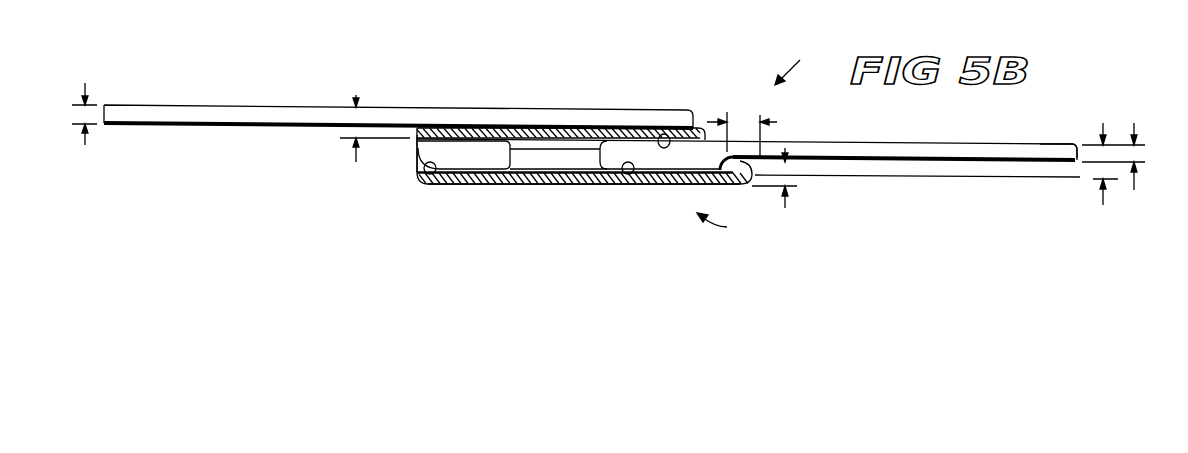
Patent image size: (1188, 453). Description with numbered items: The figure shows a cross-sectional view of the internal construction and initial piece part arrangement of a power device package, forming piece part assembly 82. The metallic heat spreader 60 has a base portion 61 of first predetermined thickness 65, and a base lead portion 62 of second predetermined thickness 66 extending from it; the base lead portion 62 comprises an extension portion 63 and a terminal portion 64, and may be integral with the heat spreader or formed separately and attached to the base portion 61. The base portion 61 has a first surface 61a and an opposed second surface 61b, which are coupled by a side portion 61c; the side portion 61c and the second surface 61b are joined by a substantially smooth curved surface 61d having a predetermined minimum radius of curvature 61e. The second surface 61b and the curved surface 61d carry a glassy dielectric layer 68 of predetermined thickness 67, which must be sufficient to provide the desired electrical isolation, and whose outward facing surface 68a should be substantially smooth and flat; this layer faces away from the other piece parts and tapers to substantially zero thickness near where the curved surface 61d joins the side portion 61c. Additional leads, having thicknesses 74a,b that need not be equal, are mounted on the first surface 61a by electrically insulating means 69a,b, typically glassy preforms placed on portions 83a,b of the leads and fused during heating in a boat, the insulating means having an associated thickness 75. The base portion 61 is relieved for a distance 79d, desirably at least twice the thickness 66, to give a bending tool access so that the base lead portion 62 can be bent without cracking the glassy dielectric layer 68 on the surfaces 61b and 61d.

The metallic heat spreader 60 is at (726, 215).
The base portion 61 is at (676, 162).
The first surface 61a is at (663, 135).
The second surface 61b is at (631, 174).
The side portion 61c is at (413, 148).
The substantially smooth curved surface 61d is at (433, 174).
The predetermined minimum radius of curvature 61e is at (411, 171).
The base lead portion 62 is at (830, 139).
The extension portion 63 is at (896, 140).
The terminal portion 64 is at (1050, 143).
The first predetermined thickness 65 is at (1103, 172).
The second predetermined thickness 66 is at (1145, 156).
The predetermined thickness 67 is at (798, 181).
The glassy dielectric layer 68 is at (481, 177).
The outward facing surface 68a is at (528, 183).
The electrically insulating means 69a,b is at (566, 127).
The thicknesses of leads 74a,b is at (76, 109).
The thickness of insulating means 75 is at (342, 137).
The distance 79d is at (740, 118).
The piece part assembly 82 is at (802, 61).
The portions of leads 83a,b is at (534, 111).